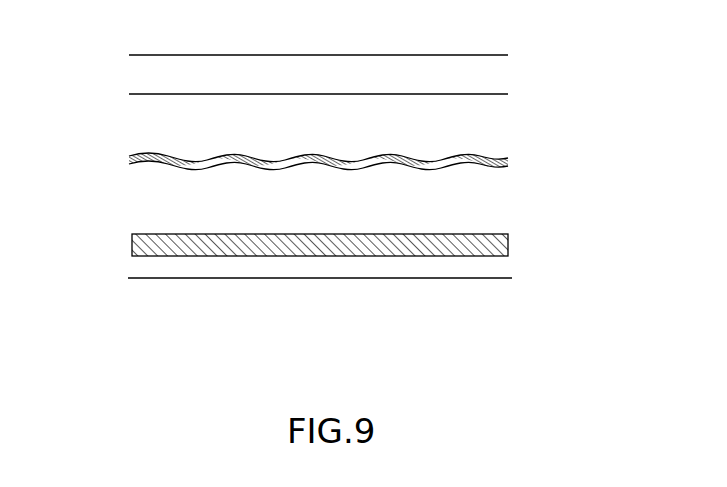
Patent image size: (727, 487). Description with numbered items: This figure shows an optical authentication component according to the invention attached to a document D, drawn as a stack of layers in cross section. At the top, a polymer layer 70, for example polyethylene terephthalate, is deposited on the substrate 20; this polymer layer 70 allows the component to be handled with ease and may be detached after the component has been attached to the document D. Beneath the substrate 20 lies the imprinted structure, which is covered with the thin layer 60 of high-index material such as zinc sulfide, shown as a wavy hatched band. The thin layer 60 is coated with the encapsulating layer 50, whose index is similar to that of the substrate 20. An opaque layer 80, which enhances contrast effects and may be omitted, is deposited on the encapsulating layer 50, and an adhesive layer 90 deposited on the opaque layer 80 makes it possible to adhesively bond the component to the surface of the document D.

The polymer layer 70 is at (488, 78).
The substrate 20 is at (492, 130).
The thin layer 60 is at (507, 162).
The encapsulating layer 50 is at (490, 198).
The opaque layer 80 is at (132, 240).
The adhesive layer 90 is at (483, 272).
The document D is at (459, 293).